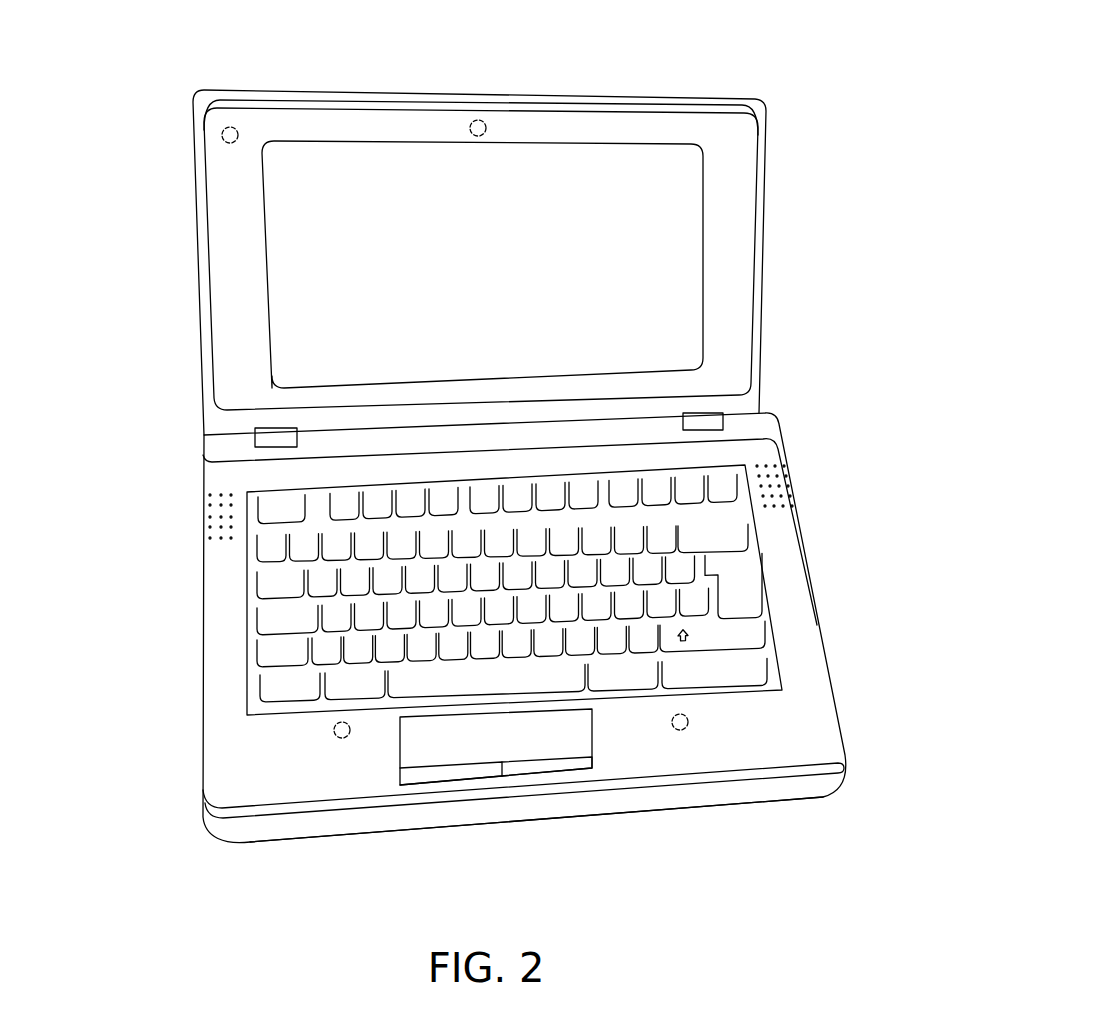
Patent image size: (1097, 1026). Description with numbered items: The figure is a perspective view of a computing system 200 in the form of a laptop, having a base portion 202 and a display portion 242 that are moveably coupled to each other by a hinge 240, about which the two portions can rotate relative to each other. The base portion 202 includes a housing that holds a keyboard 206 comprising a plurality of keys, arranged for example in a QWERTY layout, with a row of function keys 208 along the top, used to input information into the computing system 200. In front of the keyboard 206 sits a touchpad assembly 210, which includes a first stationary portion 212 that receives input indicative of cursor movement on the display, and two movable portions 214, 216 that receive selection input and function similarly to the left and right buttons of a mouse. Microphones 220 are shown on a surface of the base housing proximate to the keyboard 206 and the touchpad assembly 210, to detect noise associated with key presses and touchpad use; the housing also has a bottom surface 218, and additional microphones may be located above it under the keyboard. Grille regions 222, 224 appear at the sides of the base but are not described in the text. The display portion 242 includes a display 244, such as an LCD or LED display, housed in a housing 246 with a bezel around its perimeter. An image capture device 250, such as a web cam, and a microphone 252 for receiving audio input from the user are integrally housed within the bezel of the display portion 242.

The computing system 200 is at (830, 162).
The base portion 202 is at (826, 640).
The keyboard 206 is at (373, 618).
The function keys 208 is at (587, 500).
The touchpad assembly 210 is at (593, 740).
The first stationary portion 212 is at (432, 750).
The movable portion 214 is at (463, 775).
The movable portion 216 is at (528, 778).
The bottom surface 218 is at (750, 803).
The microphones 220 is at (333, 731).
The speaker 222 is at (213, 518).
The speaker grille 224 is at (213, 538).
The hinge 240 is at (265, 437).
The display portion 242 is at (192, 148).
The display 244 is at (638, 205).
The housing 246 is at (207, 282).
The image capture device 250 is at (470, 128).
The microphone 252 is at (223, 142).